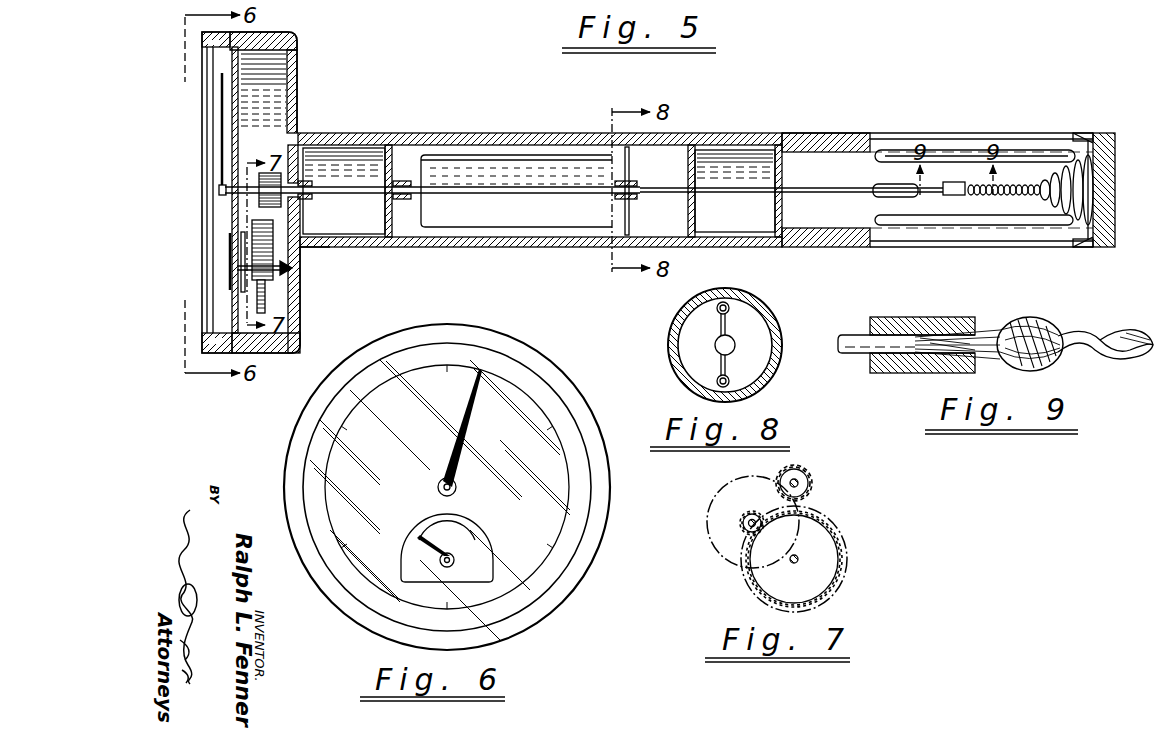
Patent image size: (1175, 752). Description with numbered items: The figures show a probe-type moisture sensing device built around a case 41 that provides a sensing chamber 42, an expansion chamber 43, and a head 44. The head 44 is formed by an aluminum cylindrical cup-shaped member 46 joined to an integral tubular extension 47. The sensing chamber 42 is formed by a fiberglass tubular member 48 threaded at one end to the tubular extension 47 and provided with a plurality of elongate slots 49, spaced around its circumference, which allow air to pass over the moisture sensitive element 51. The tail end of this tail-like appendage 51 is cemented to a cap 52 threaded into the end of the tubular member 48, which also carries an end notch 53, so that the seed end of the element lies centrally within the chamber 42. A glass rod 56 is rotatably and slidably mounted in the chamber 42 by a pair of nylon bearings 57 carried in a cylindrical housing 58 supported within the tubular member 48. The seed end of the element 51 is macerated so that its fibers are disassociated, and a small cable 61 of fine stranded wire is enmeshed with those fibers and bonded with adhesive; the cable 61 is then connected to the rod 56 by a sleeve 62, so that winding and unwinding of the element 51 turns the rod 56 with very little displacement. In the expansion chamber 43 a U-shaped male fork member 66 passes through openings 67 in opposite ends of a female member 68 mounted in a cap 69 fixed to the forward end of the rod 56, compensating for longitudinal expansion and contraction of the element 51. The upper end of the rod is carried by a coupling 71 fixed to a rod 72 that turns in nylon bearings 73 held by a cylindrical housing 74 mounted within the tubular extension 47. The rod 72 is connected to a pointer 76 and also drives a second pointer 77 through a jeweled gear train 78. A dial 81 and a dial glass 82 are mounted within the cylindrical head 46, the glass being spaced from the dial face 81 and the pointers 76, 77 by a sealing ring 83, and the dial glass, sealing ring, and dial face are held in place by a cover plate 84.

In FIG. 5, the case 41 is at (695, 176).
In FIG. 5, the sensing chamber 42 is at (887, 205).
In FIG. 5, the expansion chamber 43 is at (447, 238).
In FIG. 5, the head 44 is at (290, 78).
In FIG. 5, the cylindrical cup-shaped member 46 is at (298, 120).
In FIG. 5, the tubular extension 47 is at (404, 140).
In FIG. 5, the tubular member 48 is at (1014, 226).
In FIG. 5, the elongate slots 49 is at (1024, 157).
In FIG. 5, the moisture sensitive element 51 is at (1018, 190).
In FIG. 9, the moisture sensitive element 51 is at (1130, 340).
In FIG. 5, the cap 52 is at (1115, 168).
In FIG. 5, the end cap notch 53 is at (1075, 200).
In FIG. 5, the rod 56 is at (880, 185).
In FIG. 9, the rod 56 is at (858, 340).
In FIG. 5, the nylon bearings 57 is at (786, 180).
In FIG. 5, the cylindrical housing 58 is at (782, 135).
In FIG. 9, the cable 61 is at (983, 335).
In FIG. 9, the sleeve 62 is at (897, 372).
In FIG. 5, the U-shaped male fork member 66 is at (440, 226).
In FIG. 8, the openings 67 is at (727, 305).
In FIG. 8, the female member 68 is at (721, 362).
In FIG. 5, the cap 69 is at (618, 194).
In FIG. 8, the cap 69 is at (732, 345).
In FIG. 5, the coupling 71 is at (401, 200).
In FIG. 5, the rod 72 is at (313, 200).
In FIG. 5, the nylon bearings 73 is at (306, 186).
In FIG. 5, the cylindrical housing 74 is at (337, 248).
In FIG. 5, the pointer 76 is at (222, 161).
In FIG. 6, the pointer 76 is at (460, 462).
In FIG. 5, the pointer 77 is at (230, 256).
In FIG. 6, the pointer 77 is at (432, 540).
In FIG. 7, the jeweled gear train 78 is at (805, 503).
In FIG. 5, the dial 81 is at (290, 47).
In FIG. 5, the dial glass 82 is at (213, 118).
In FIG. 6, the dial glass 82 is at (367, 444).
In FIG. 5, the sealing ring 83 is at (206, 44).
In FIG. 5, the cover plate 84 is at (210, 343).
In FIG. 6, the cover plate 84 is at (598, 533).